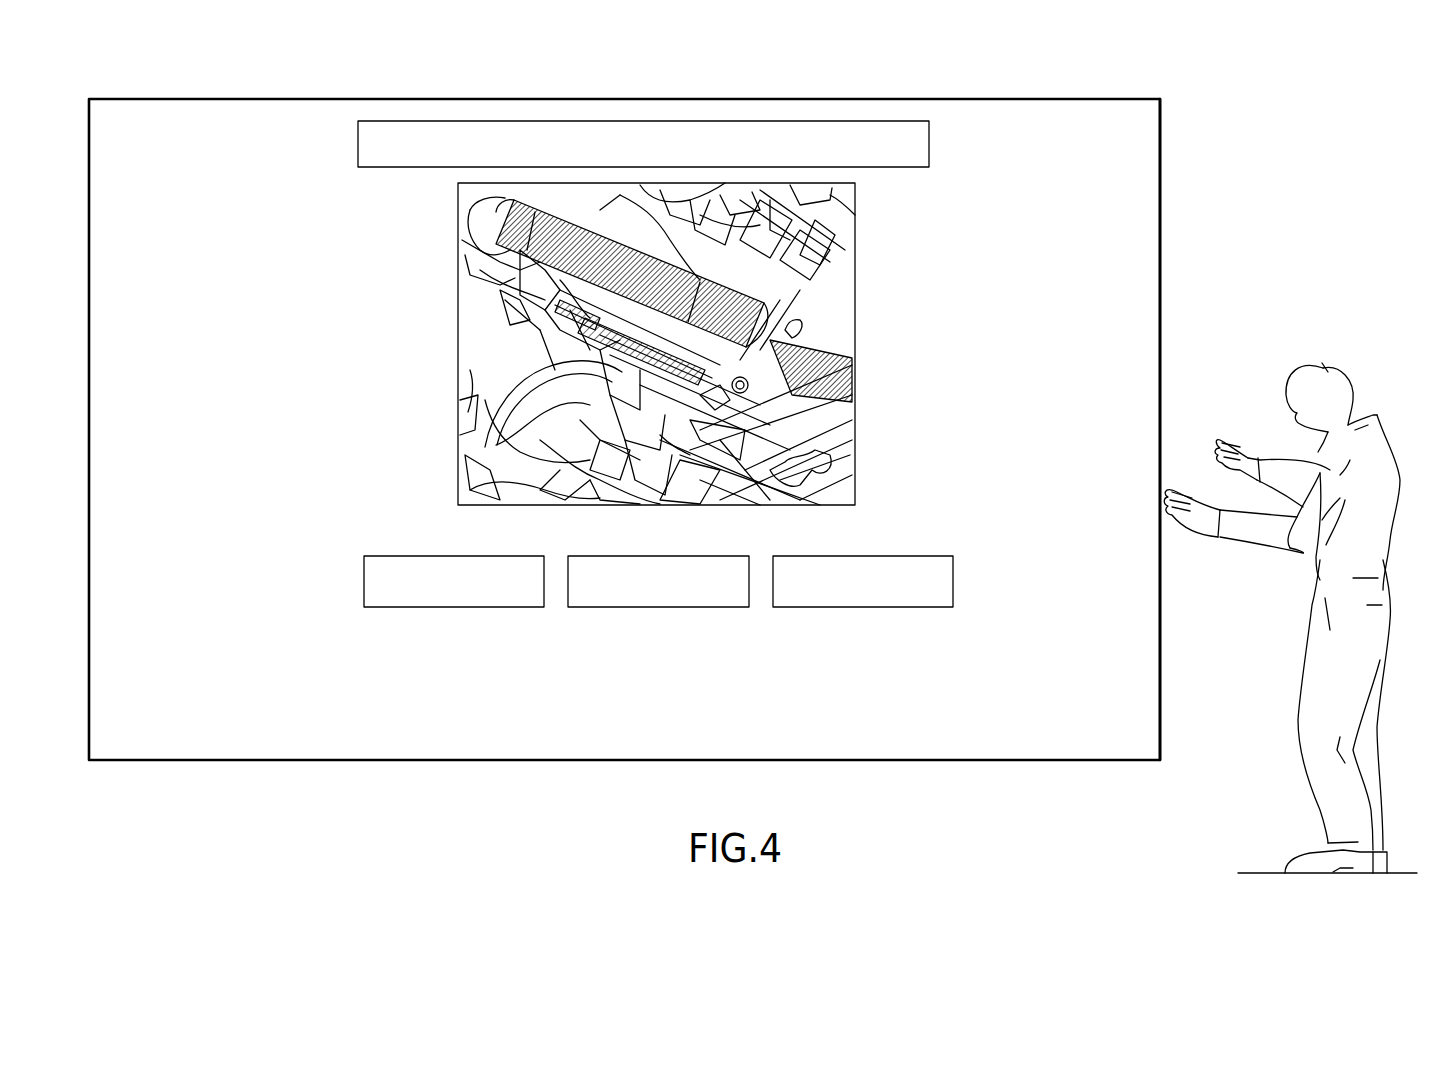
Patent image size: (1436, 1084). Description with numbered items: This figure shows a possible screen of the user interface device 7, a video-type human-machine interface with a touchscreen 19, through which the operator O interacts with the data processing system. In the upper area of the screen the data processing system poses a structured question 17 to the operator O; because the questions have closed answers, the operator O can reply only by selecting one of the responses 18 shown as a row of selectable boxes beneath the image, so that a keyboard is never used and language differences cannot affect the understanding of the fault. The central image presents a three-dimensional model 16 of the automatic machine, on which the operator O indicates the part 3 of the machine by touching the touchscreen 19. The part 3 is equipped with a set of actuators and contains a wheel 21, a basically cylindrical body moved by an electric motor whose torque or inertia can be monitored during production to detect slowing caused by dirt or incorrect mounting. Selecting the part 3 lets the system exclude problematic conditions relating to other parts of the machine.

The user interface device 7 is at (1028, 88).
The structured questions 17 is at (920, 150).
The touchscreen 19 is at (1138, 240).
The part 3 is at (630, 344).
The three-dimensional model 16 is at (812, 425).
The wheel 21 is at (512, 404).
The responses 18 is at (467, 607).
The operator O is at (1323, 366).